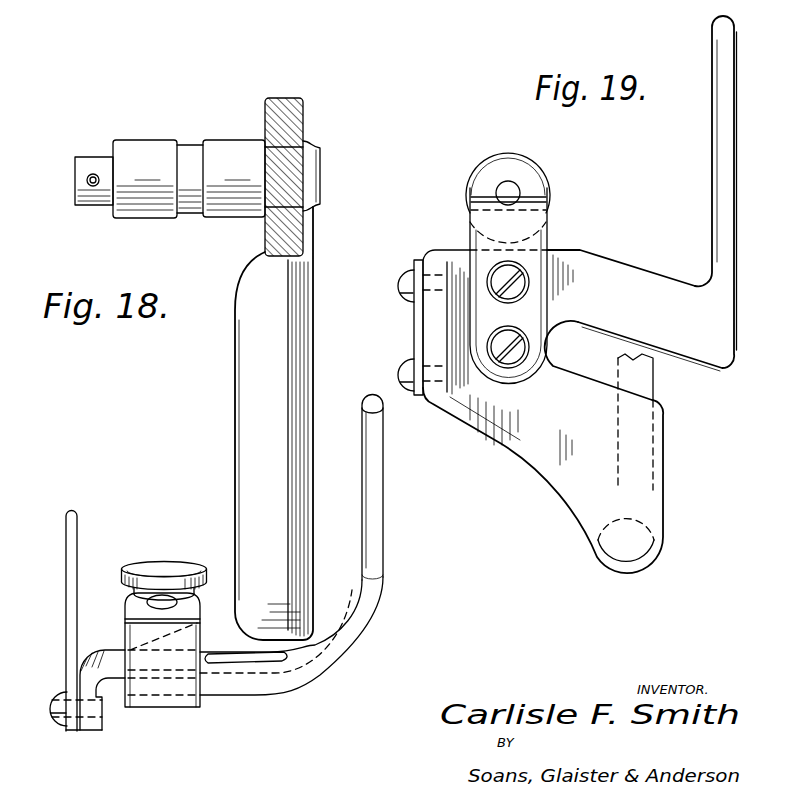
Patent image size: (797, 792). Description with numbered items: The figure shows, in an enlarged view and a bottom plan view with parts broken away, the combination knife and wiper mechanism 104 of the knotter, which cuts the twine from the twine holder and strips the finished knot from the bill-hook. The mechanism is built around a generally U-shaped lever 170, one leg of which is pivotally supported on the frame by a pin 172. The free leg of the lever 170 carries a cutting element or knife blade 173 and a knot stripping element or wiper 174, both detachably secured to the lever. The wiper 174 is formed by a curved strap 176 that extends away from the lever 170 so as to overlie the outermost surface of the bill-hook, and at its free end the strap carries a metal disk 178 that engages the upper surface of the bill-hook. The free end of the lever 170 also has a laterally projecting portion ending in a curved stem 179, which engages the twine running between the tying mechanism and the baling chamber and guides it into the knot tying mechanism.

In FIG. 18, the combination knife and wiper mechanism 104 is at (233, 423).
In FIG. 19, the combination knife and wiper mechanism 104 is at (580, 294).
In FIG. 18, the U-shaped lever 170 is at (235, 377).
In FIG. 19, the U-shaped lever 170 is at (540, 458).
In FIG. 18, the pin 172 is at (220, 142).
In FIG. 18, the knife blade 173 is at (68, 537).
In FIG. 19, the knife blade 173 is at (414, 318).
In FIG. 18, the wiper 174 is at (121, 632).
In FIG. 18, the curved strap 176 is at (201, 610).
In FIG. 19, the curved strap 176 is at (548, 232).
In FIG. 18, the metal disk 178 is at (147, 563).
In FIG. 19, the metal disk 178 is at (501, 154).
In FIG. 18, the curved stem 179 is at (378, 493).
In FIG. 19, the curved stem 179 is at (712, 161).